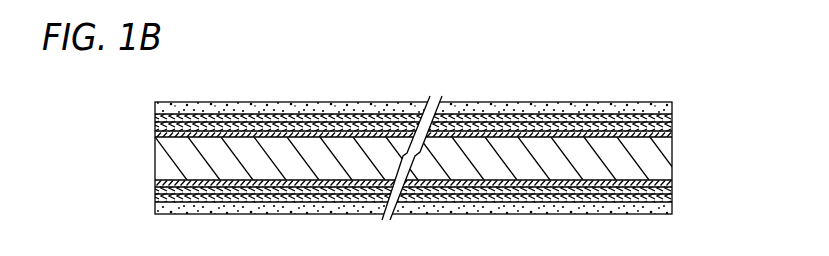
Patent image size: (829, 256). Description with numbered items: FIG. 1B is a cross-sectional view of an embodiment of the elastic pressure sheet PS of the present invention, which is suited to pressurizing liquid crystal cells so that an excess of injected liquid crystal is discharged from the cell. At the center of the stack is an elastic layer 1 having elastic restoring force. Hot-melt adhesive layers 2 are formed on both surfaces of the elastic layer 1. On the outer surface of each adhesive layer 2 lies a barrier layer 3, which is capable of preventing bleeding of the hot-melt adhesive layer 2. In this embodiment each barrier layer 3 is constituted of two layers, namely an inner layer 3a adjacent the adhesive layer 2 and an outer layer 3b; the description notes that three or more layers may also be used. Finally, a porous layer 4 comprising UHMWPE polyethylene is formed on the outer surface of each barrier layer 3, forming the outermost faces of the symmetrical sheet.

The polarizing sheet PS is at (559, 92).
The elastic layer 1 is at (672, 160).
The hot-melt adhesive layer 2 is at (672, 133).
The barrier layer 3 is at (459, 150).
The inner layer 3a is at (672, 127).
The outer layer 3b is at (672, 118).
The porous layer 4 is at (672, 108).